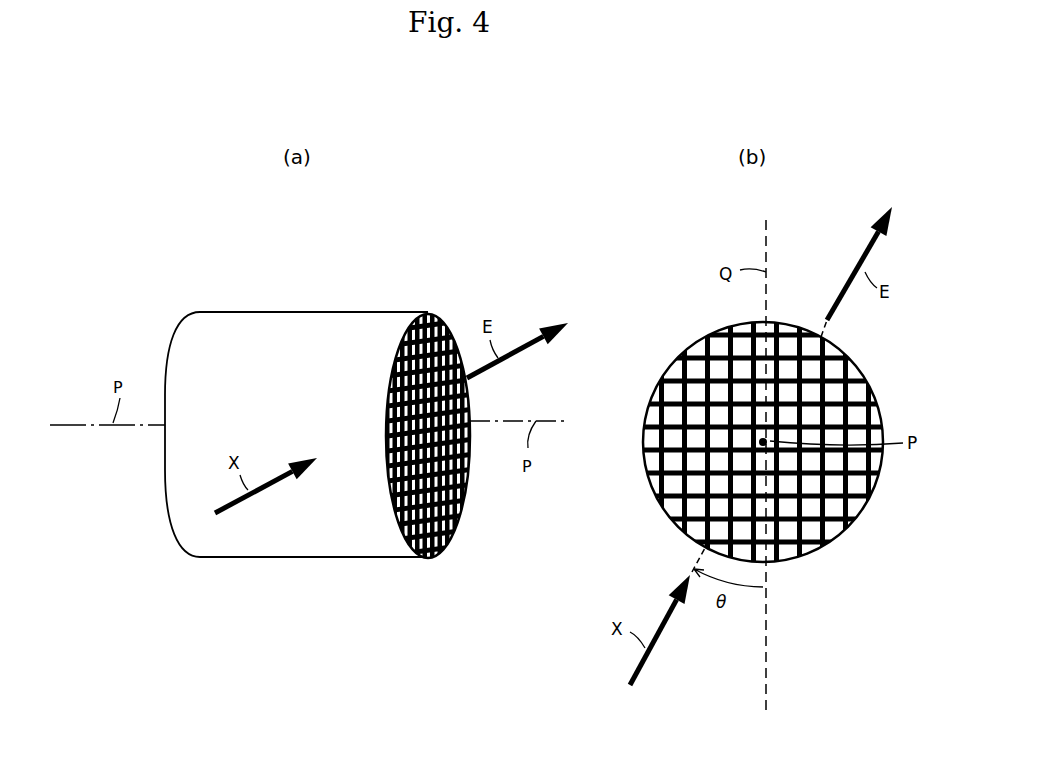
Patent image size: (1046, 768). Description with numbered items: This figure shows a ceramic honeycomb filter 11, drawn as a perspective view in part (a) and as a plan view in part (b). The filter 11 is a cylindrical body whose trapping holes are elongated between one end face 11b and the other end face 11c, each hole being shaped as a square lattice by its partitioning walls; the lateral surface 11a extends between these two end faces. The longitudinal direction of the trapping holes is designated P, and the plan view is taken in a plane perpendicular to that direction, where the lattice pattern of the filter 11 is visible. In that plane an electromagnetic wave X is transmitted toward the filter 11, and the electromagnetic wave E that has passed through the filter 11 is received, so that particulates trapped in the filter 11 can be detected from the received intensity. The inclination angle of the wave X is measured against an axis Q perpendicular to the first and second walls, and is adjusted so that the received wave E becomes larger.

The filter 11 is at (318, 400).
The side surface of optical element 11a is at (283, 327).
The one end face 11b is at (182, 333).
The other end face 11c is at (438, 312).